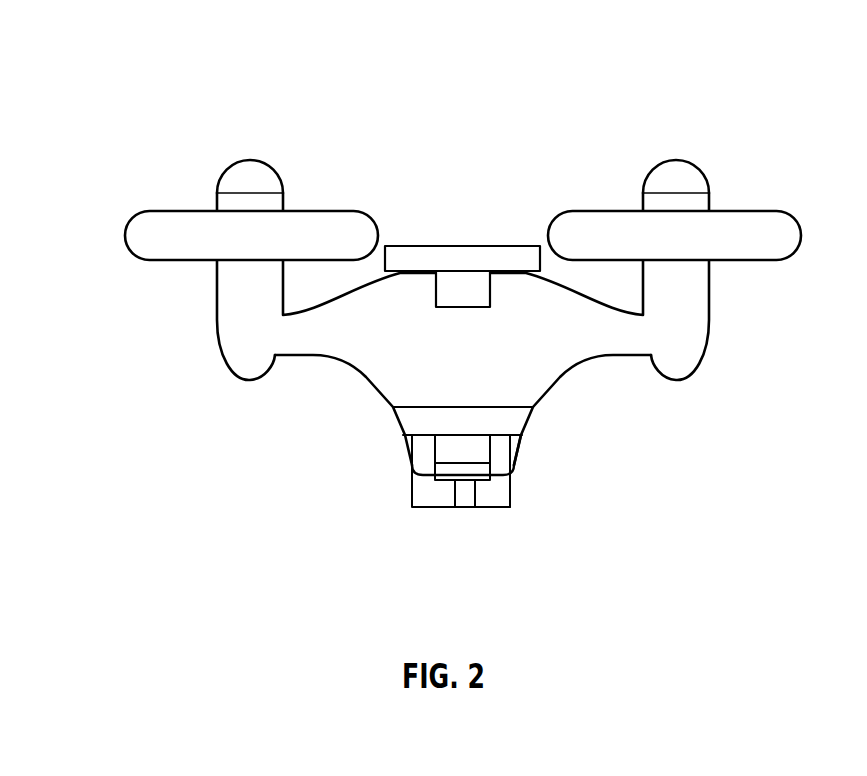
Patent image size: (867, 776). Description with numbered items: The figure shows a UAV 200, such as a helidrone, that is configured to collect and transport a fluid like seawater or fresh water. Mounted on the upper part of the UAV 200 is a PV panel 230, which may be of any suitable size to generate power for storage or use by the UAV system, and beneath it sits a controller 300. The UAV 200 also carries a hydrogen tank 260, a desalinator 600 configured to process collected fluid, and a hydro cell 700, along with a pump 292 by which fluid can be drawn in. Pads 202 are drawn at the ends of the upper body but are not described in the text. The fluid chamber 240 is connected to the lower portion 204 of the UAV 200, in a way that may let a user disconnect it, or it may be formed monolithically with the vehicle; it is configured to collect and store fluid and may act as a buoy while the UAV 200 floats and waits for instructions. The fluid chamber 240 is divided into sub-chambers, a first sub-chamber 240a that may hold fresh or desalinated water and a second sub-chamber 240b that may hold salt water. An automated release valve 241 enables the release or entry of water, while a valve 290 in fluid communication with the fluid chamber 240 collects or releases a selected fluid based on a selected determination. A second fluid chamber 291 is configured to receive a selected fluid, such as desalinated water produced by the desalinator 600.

The UAV 200 is at (152, 54).
The ear pads 202 is at (110, 230).
The lower portion 204 is at (355, 398).
The PV panel 230 is at (427, 247).
The controller 300 is at (468, 292).
The hydrogen tank 260 is at (518, 425).
The desalinator 600 is at (487, 453).
The hydro cell 700 is at (410, 445).
The valve 290 is at (420, 507).
The second fluid chamber 291 is at (512, 500).
The pump 292 is at (522, 458).
The fluid chamber 240 is at (483, 483).
The first sub-chamber 240a is at (455, 481).
The second sub-chamber 240b is at (464, 480).
The automated release valve 241 is at (455, 507).